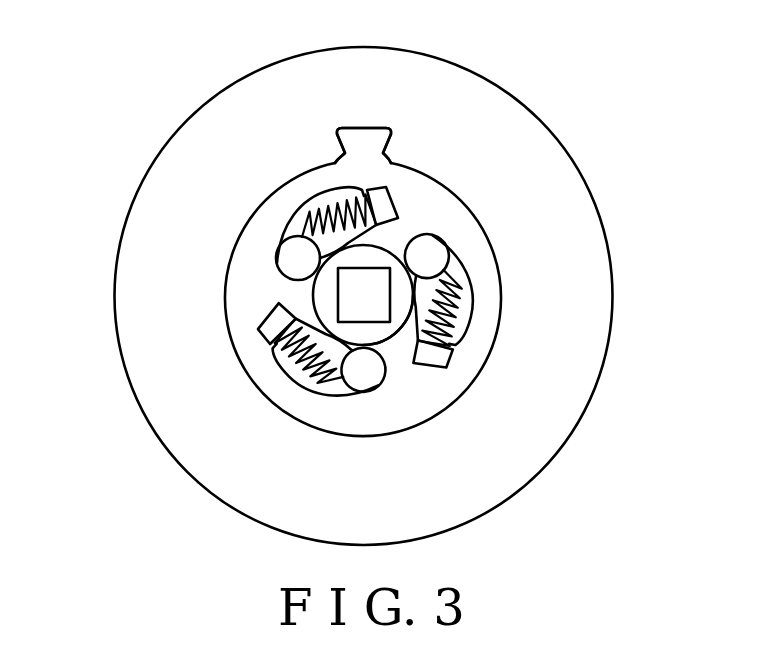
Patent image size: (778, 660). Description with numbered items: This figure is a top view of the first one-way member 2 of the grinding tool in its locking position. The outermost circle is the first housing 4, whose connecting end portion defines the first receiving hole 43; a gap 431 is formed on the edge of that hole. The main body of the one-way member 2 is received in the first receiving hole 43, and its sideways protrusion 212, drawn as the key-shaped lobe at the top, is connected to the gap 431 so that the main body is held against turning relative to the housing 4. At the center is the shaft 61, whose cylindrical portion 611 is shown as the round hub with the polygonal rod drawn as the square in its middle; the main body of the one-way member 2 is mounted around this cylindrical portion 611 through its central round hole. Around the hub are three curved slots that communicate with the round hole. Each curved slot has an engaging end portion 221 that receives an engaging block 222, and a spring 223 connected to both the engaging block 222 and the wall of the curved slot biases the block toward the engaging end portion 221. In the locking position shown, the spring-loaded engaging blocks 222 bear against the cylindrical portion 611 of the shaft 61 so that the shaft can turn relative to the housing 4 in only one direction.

The first one-way member 2 is at (535, 265).
The first housing 4 is at (560, 188).
The first receiving hole 43 is at (498, 330).
The shaft 61 is at (367, 285).
The cylindrical portion 611 is at (398, 340).
The sideways protrusion 212 is at (363, 140).
The gap 431 is at (363, 145).
The engaging end portion 221 is at (282, 270).
The engaging block 222 is at (287, 253).
The spring 223 is at (313, 207).